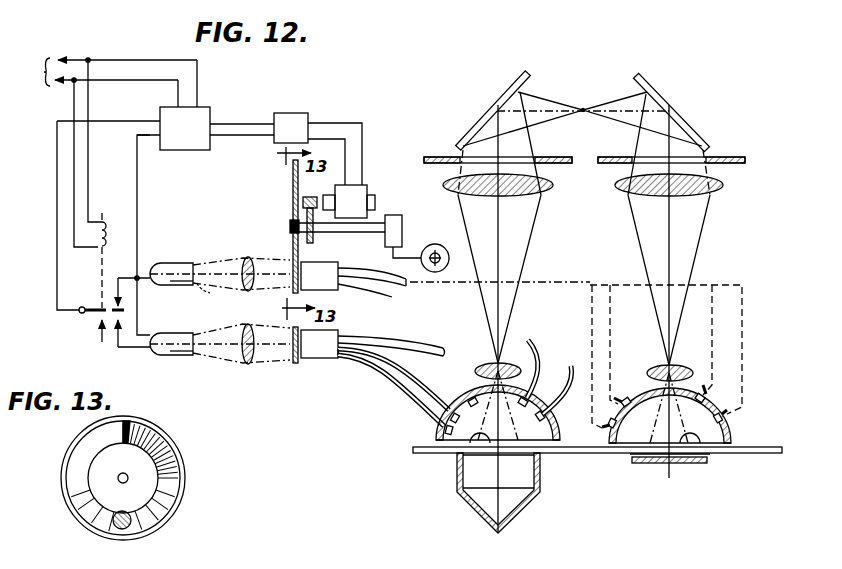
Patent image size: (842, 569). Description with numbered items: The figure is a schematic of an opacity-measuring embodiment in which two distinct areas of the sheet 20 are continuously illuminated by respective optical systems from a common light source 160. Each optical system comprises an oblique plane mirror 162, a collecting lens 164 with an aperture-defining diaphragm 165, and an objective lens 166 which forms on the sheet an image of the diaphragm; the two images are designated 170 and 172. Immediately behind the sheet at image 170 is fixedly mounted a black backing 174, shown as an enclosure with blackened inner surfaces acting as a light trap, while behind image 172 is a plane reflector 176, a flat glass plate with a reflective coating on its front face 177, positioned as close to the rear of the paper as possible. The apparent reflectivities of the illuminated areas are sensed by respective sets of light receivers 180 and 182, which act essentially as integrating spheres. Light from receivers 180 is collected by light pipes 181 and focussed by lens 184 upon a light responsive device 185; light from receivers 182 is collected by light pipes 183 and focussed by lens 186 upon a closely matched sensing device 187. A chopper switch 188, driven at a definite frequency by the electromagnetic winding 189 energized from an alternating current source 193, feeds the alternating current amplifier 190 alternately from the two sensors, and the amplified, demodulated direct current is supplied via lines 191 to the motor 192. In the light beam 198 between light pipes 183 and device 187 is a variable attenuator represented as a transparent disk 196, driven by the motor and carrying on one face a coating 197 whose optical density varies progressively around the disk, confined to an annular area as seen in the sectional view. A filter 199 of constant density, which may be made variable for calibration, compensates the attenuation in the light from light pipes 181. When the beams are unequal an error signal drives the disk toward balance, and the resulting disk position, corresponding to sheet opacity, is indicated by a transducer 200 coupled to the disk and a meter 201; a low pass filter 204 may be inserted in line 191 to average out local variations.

In FIG. 12, the sheet 20 is at (770, 448).
In FIG. 12, the light source 160 is at (583, 109).
In FIG. 12, the oblique plane mirror 162 is at (515, 80).
In FIG. 12, the collecting lens 164 is at (546, 191).
In FIG. 12, the aperture-defining diaphragm 165 is at (728, 160).
In FIG. 12, the objective lens 166 is at (515, 364).
In FIG. 12, the image 170 is at (470, 434).
In FIG. 12, the image 172 is at (693, 444).
In FIG. 12, the black backing 174 is at (527, 500).
In FIG. 12, the plane reflector 176 is at (688, 465).
In FIG. 12, the front face 177 is at (640, 456).
In FIG. 12, the light receivers 180 is at (446, 427).
In FIG. 12, the light pipes 181 is at (419, 347).
In FIG. 12, the light receivers 182 is at (728, 408).
In FIG. 12, the light pipes 183 is at (403, 285).
In FIG. 12, the lens 184 is at (249, 364).
In FIG. 12, the light responsive device 185 is at (175, 356).
In FIG. 12, the lens 186 is at (247, 258).
In FIG. 12, the sensing device 187 is at (178, 263).
In FIG. 12, the chopper switch 188 is at (102, 340).
In FIG. 12, the electromagnetic winding 189 is at (118, 207).
In FIG. 12, the alternating current amplifier 190 is at (210, 109).
In FIG. 12, the lines 191 is at (252, 132).
In FIG. 12, the motor 192 is at (364, 194).
In FIG. 12, the alternating current source 193 is at (103, 152).
In FIG. 12, the transparent disk 196 is at (291, 187).
In FIG. 13, the transparent disk 196 is at (193, 481).
In FIG. 12, the coating 197 is at (292, 212).
In FIG. 13, the coating 197 is at (167, 497).
In FIG. 12, the light beam 198 is at (206, 297).
In FIG. 13, the light beam 198 is at (130, 516).
In FIG. 12, the filter 199 is at (297, 364).
In FIG. 12, the transducer 200 is at (402, 224).
In FIG. 12, the meter 201 is at (445, 252).
In FIG. 12, the low pass filter 204 is at (308, 118).